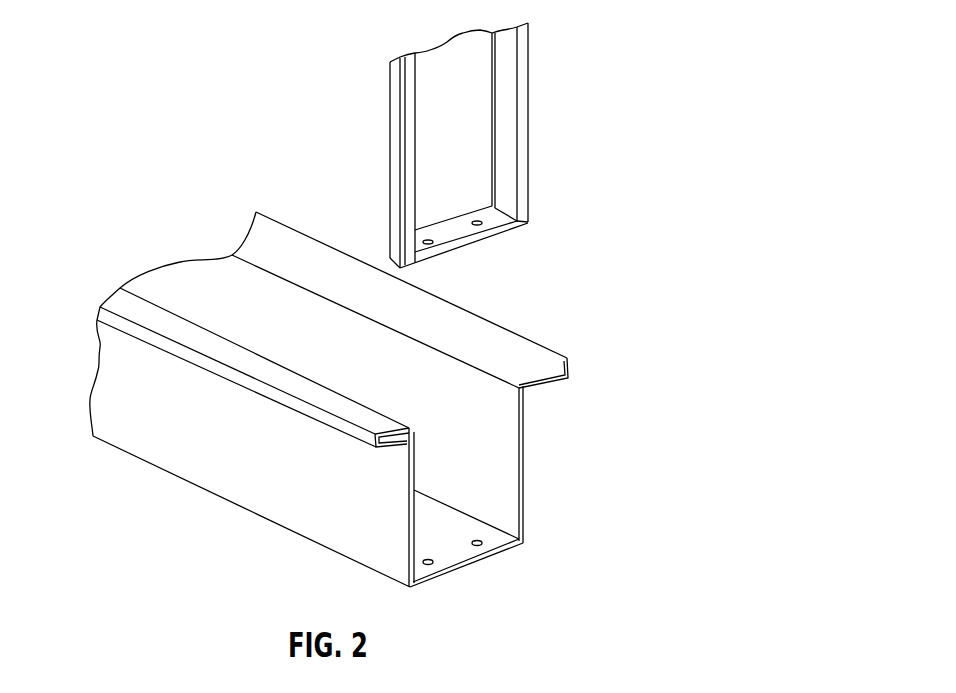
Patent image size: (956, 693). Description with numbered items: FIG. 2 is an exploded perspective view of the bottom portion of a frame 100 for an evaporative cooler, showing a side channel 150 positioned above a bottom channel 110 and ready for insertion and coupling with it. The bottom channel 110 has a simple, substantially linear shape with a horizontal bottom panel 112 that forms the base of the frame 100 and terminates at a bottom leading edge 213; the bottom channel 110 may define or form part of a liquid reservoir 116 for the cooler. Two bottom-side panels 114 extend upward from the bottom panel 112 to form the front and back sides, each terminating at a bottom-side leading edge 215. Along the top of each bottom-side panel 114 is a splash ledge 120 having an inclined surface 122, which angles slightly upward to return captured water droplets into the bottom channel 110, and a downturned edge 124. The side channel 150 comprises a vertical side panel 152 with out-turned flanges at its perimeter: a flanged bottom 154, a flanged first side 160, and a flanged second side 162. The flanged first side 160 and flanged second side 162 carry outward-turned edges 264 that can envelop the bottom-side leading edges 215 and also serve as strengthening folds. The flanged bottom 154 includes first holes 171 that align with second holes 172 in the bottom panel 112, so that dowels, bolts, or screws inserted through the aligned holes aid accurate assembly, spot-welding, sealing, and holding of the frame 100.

The frame 100 is at (625, 152).
The bottom channel 110 is at (117, 452).
The bottom panel 112 is at (453, 532).
The bottom-side panels 114 is at (218, 480).
The reservoir 116 is at (468, 452).
The splash ledges 120 is at (544, 340).
The inclined surface 122 is at (132, 310).
The downturned edge 124 is at (572, 380).
The side channel 150 is at (546, 40).
The vertical side panel 152 is at (475, 149).
The flanged bottom 154 is at (447, 255).
The flanged first side 160 is at (389, 112).
The flanged second side 162 is at (541, 86).
The first holes 171 is at (478, 226).
The second holes 172 is at (497, 544).
The bottom leading edge 213 is at (440, 575).
The bottom-side leading edges 215 is at (524, 462).
The outward-turned edge 264 is at (533, 136).